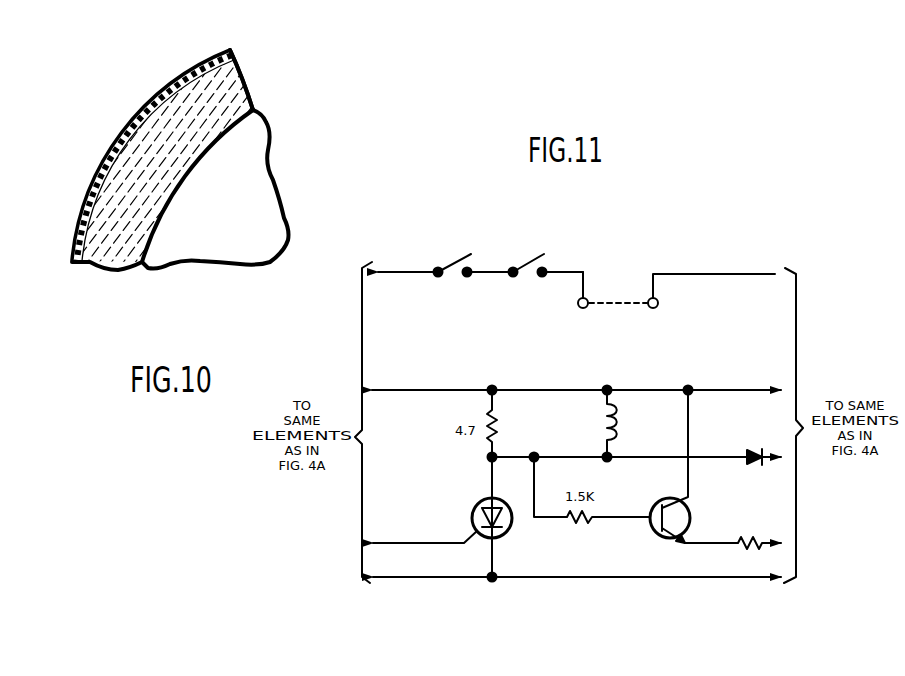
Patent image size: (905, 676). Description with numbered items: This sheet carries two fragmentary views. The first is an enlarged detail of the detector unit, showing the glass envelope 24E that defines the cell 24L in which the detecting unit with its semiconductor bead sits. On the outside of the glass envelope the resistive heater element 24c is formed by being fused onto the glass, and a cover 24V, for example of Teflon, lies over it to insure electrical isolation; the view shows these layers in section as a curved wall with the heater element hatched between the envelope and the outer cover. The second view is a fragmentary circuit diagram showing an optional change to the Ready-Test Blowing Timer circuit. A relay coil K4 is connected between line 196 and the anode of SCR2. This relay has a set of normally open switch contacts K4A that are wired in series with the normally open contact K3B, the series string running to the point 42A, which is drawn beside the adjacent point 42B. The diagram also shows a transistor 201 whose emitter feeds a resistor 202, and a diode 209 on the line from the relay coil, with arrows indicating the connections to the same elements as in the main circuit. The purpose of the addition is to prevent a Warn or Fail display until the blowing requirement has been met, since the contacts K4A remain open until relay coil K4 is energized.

In FIG. 10, the glass envelope 24E is at (251, 86).
In FIG. 10, the resistive heater element 24c is at (118, 133).
In FIG. 10, the cover 24V is at (90, 191).
In FIG. 10, the cell 24L is at (236, 203).
In FIG. 11, the K3B normally open contact K3B is at (445, 278).
In FIG. 11, the switch contacts K4A is at (548, 303).
In FIG. 11, the terminal 42A is at (608, 301).
In FIG. 11, the terminal 42B is at (705, 302).
In FIG. 11, the line 196 is at (742, 378).
In FIG. 11, the relay coil K4 is at (648, 432).
In FIG. 11, the SCR 2 SCR2 is at (458, 517).
In FIG. 11, the transistor 201 is at (664, 537).
In FIG. 11, the resistor 202 is at (757, 548).
In FIG. 11, the diode 209 is at (753, 453).